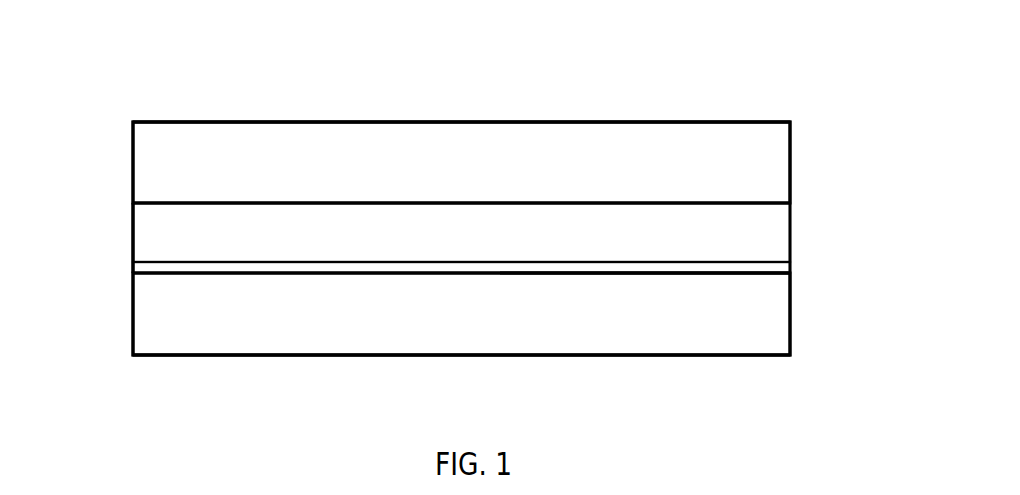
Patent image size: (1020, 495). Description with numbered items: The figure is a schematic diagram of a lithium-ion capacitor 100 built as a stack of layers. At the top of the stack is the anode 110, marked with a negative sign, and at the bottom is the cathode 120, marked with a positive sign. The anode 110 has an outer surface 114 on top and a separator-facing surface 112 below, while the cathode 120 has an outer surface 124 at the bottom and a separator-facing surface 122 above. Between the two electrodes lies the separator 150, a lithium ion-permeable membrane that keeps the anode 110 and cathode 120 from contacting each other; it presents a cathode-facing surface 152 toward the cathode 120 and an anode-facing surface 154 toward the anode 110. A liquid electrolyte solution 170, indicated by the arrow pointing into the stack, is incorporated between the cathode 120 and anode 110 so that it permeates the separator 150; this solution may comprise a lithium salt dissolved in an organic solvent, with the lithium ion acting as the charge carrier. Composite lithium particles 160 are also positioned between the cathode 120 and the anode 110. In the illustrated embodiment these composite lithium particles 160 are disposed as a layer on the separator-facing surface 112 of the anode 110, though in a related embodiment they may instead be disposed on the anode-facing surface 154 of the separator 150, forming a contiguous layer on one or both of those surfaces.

The lithium-ion capacitor 100 is at (741, 96).
The anode 110 is at (791, 153).
The separator-facing surface of anode 112 is at (403, 204).
The outer surface of anode 114 is at (333, 120).
The cathode 120 is at (791, 315).
The separator-facing surface of cathode 122 is at (402, 265).
The outer surface of cathode 124 is at (333, 357).
The separator 150 is at (791, 267).
The cathode-facing surface of separator 152 is at (614, 276).
The anode-facing surface of separator 154 is at (672, 262).
The composite lithium particles 160 is at (791, 228).
The liquid electrolyte solution 170 is at (104, 228).